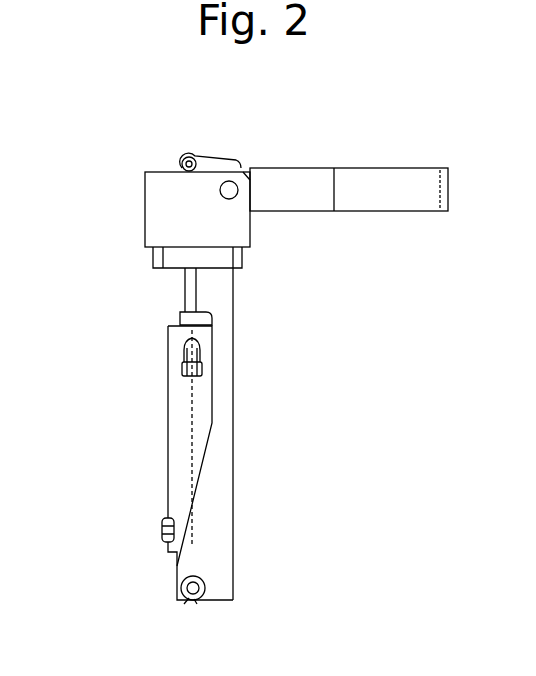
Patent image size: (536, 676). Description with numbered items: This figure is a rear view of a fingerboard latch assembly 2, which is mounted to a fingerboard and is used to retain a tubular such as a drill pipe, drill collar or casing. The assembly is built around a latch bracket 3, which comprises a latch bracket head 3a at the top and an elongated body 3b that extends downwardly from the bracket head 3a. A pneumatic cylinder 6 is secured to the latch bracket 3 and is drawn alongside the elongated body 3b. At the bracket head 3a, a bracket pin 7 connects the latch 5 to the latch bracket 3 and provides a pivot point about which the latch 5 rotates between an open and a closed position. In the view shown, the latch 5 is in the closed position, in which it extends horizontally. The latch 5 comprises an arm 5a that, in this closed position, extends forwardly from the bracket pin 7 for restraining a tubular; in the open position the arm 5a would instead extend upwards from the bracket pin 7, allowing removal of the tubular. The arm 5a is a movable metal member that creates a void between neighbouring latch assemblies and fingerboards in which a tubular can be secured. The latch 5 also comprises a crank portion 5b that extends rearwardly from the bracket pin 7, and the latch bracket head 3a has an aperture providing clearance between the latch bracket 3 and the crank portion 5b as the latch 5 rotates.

The fingerboard latch assembly 2 is at (121, 134).
The latch bracket 3 is at (220, 400).
The latch bracket head 3a is at (162, 212).
The elongated body 3b is at (226, 582).
The latch 5 is at (378, 168).
The arm 5a is at (422, 192).
The crank portion 5b is at (218, 152).
The pneumatic cylinder 6 is at (180, 432).
The bracket pin 7 is at (231, 197).